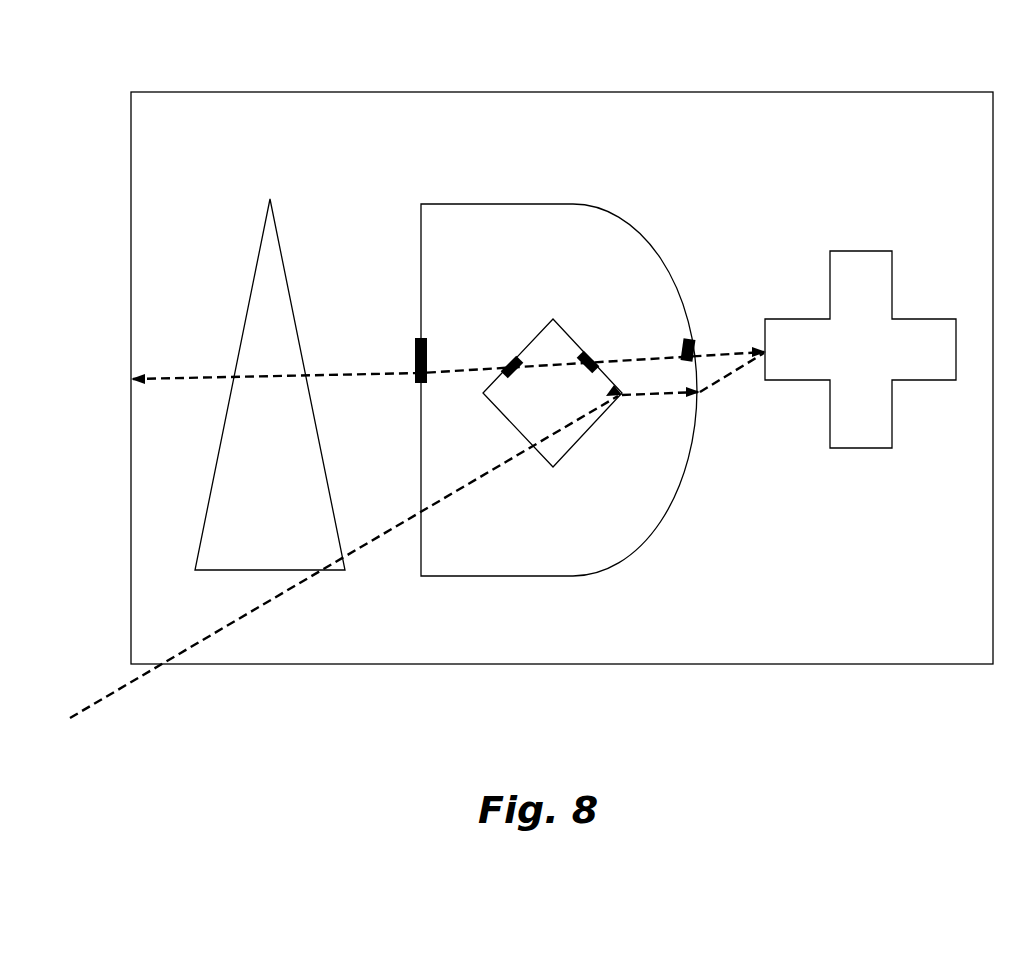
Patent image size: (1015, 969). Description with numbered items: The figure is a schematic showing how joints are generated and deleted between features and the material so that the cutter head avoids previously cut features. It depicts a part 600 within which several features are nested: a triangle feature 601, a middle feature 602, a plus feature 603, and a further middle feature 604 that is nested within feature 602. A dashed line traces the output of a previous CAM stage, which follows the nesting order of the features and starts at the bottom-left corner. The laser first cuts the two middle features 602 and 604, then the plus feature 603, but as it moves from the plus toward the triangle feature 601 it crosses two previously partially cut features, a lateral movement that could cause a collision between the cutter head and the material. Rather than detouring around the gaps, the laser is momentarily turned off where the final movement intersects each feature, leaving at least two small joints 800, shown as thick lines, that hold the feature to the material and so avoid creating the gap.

The part 600 is at (520, 92).
The triangle feature 601 is at (260, 193).
The middle feature 602 is at (427, 193).
The plus feature 603 is at (827, 215).
The middle feature 604 is at (565, 425).
The joint 800 is at (592, 352).